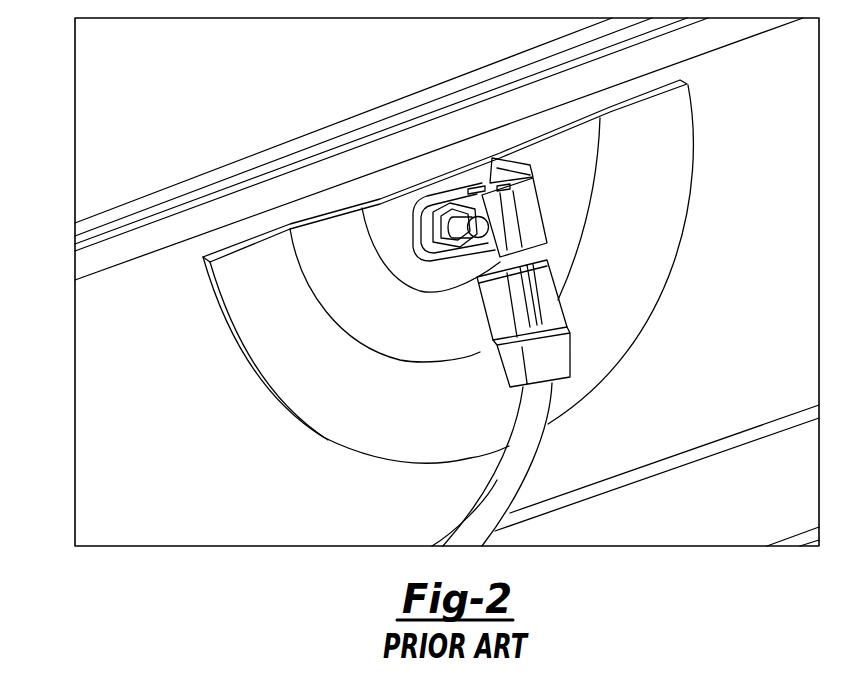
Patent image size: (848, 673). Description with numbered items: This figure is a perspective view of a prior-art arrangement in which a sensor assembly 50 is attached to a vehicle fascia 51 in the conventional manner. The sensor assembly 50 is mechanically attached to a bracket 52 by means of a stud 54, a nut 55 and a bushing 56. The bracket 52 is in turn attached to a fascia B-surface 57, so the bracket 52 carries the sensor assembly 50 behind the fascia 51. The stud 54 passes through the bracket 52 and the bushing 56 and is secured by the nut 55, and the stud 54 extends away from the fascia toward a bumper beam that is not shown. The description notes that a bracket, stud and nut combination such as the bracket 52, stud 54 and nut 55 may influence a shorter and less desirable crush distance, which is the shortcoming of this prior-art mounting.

The sensor assembly 50 is at (539, 224).
The vehicle fascia 51 is at (311, 134).
The bracket 52 is at (242, 301).
The stud 54 is at (468, 230).
The nut 55 is at (453, 230).
The bushing 56 is at (421, 230).
The fascia B-surface 57 is at (97, 435).